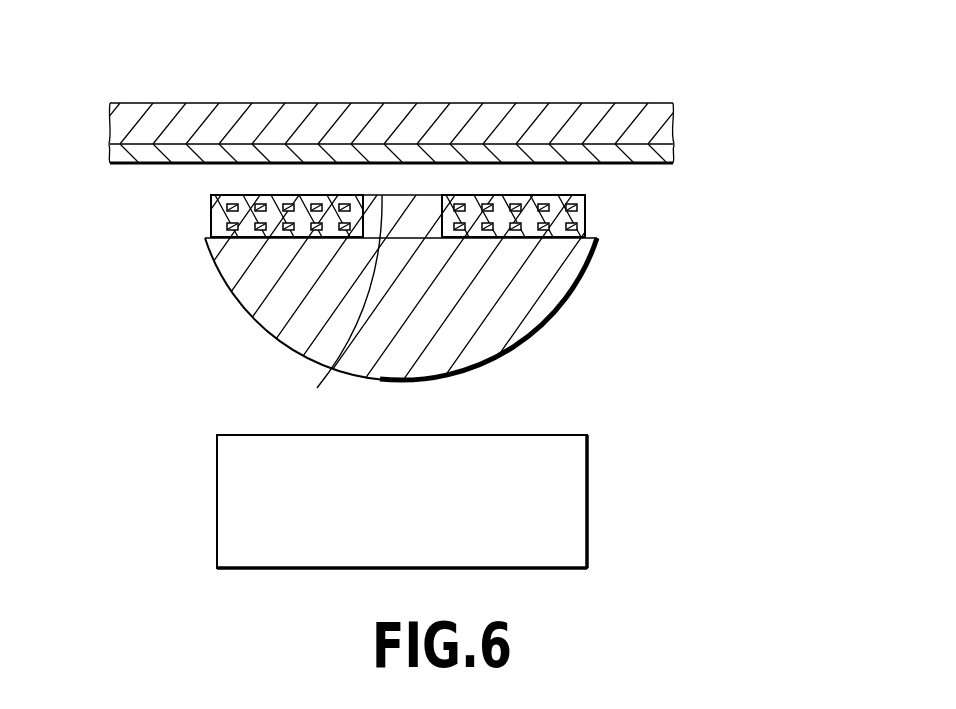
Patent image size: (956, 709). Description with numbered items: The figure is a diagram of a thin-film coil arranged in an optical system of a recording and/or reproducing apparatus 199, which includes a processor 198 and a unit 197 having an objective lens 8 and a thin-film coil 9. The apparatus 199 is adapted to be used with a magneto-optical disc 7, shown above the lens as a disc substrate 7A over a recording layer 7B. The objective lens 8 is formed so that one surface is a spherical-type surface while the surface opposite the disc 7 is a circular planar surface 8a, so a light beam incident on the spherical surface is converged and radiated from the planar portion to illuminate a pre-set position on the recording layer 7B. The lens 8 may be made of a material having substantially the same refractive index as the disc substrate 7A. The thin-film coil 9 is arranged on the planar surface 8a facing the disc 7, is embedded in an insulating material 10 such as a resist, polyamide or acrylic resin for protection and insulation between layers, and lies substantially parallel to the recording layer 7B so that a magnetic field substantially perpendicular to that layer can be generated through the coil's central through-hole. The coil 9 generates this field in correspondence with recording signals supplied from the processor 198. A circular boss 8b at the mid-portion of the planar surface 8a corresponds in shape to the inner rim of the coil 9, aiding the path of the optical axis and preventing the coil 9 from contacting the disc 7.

The magneto-optical disc 7 is at (418, 97).
The disc substrate 7A is at (664, 119).
The recording layer 7B is at (665, 156).
The objective lens 8 is at (390, 304).
The circular planar surface 8a is at (191, 226).
The circular boss 8b is at (336, 307).
The thin-film coil 9 is at (556, 225).
The insulating material 10 is at (590, 223).
The unit 197 is at (465, 303).
The processor 198 is at (587, 480).
The recording and/or reproducing apparatus 199 is at (438, 293).